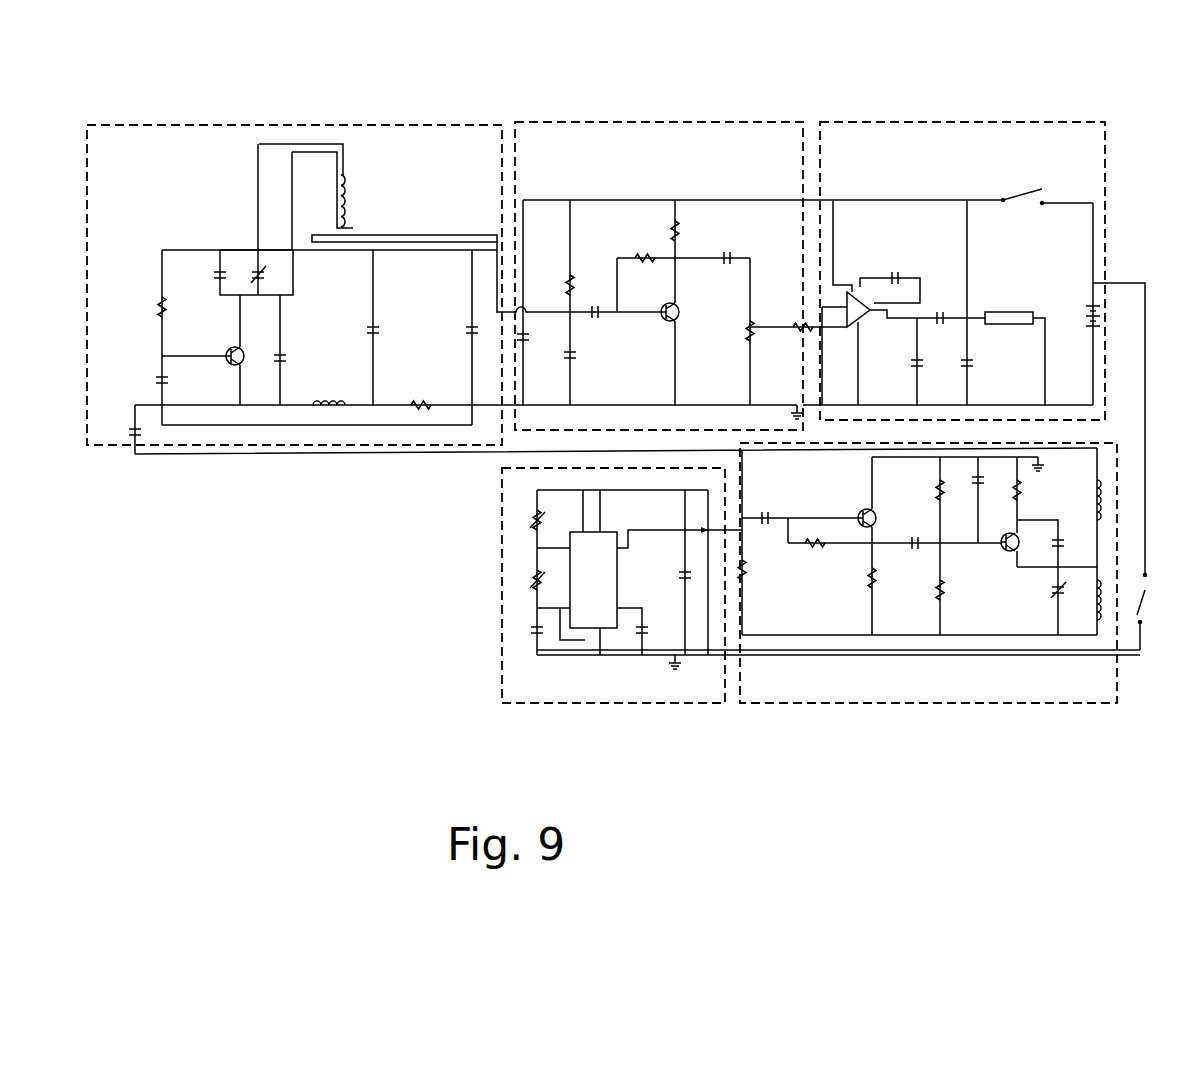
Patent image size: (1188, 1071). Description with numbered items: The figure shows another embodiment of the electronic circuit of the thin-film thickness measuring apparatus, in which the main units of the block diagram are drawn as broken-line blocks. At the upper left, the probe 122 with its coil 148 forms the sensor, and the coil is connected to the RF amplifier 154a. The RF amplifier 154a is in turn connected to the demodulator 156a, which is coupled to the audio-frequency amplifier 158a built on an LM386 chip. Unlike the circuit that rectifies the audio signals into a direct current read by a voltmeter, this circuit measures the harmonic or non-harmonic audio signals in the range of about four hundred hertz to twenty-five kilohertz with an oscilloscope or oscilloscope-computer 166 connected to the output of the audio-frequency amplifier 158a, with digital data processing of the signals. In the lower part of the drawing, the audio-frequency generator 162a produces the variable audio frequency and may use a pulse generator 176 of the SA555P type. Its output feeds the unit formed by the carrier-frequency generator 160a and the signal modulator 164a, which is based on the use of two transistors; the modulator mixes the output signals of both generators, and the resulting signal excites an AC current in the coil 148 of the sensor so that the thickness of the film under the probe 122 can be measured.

The RF amplifier 154a is at (163, 116).
The probe 122 is at (311, 127).
The coil 148 is at (357, 172).
The demodulator 156a is at (590, 111).
The audio-frequency amplifier 158a is at (864, 113).
The oscilloscope or oscilloscope-computer 166 is at (1004, 300).
The audio-frequency generator 162a is at (489, 604).
The pulse generator 176 is at (600, 615).
The carrier-frequency generator 160a is at (963, 714).
The signal modulator 164a is at (921, 610).